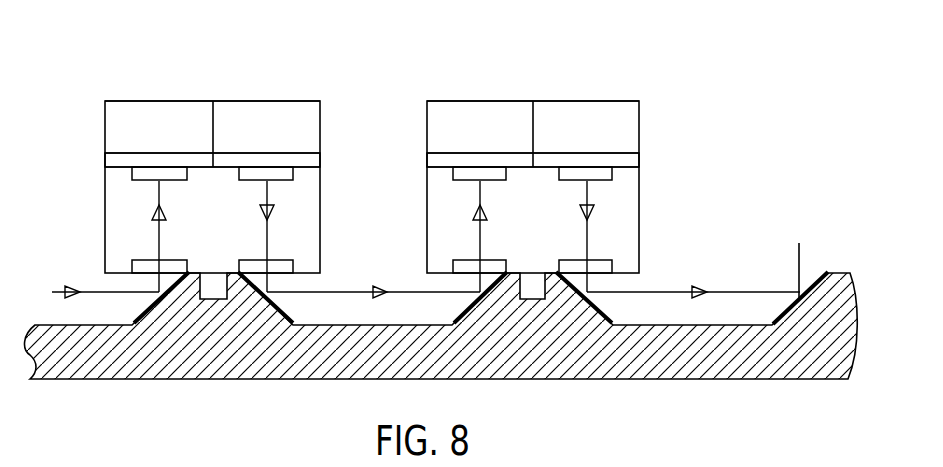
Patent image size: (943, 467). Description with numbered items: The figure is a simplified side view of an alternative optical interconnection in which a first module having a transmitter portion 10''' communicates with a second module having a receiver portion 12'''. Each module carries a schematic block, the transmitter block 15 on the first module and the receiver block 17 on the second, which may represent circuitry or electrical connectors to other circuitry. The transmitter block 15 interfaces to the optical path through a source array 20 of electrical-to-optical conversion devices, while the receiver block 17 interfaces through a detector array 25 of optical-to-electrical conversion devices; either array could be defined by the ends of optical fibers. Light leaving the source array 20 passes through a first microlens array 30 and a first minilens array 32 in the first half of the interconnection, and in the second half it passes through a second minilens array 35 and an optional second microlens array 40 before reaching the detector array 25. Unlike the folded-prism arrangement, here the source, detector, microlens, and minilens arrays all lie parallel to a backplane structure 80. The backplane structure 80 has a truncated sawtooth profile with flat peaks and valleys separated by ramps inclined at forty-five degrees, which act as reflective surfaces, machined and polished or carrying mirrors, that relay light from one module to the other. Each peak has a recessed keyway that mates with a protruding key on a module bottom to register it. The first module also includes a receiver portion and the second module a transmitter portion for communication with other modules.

The transmitter portion 10''' is at (212, 139).
The receiver portion 12''' is at (532, 139).
The transmitter block 15 is at (272, 101).
The receiver block 17 is at (473, 101).
The source array 20 is at (320, 162).
The detector array 25 is at (427, 160).
The first microlens array 30 is at (279, 181).
The first minilens array 32 is at (277, 260).
The second microlens array 40 is at (487, 181).
The second minilens array 35 is at (485, 260).
The backplane structure 80 is at (835, 273).